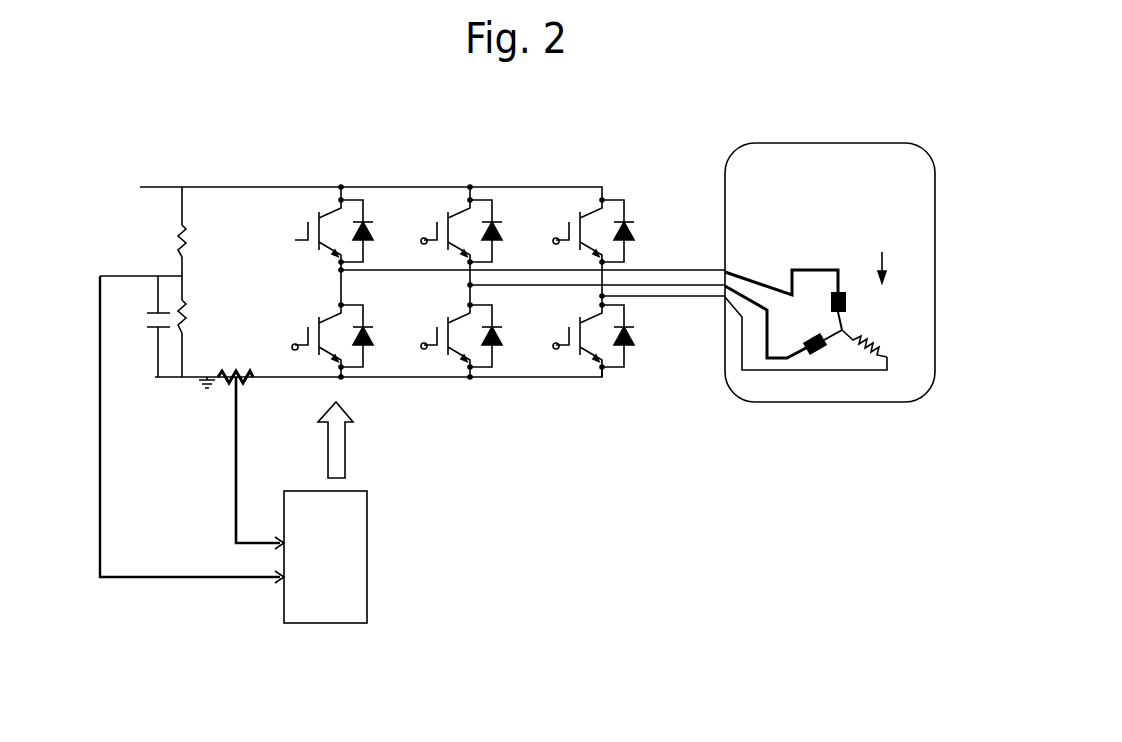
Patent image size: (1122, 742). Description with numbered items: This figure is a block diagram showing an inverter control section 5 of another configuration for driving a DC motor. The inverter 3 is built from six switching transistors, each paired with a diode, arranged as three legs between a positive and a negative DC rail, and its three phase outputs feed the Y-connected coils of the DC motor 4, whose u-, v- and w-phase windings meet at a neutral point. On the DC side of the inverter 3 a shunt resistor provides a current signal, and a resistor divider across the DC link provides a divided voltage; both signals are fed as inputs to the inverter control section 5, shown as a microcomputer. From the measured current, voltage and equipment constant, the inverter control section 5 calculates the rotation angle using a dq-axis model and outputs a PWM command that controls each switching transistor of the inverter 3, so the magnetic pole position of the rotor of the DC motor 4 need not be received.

The inverter 3 is at (520, 162).
The DC motor 4 is at (957, 227).
The inverter control section 5 is at (391, 558).